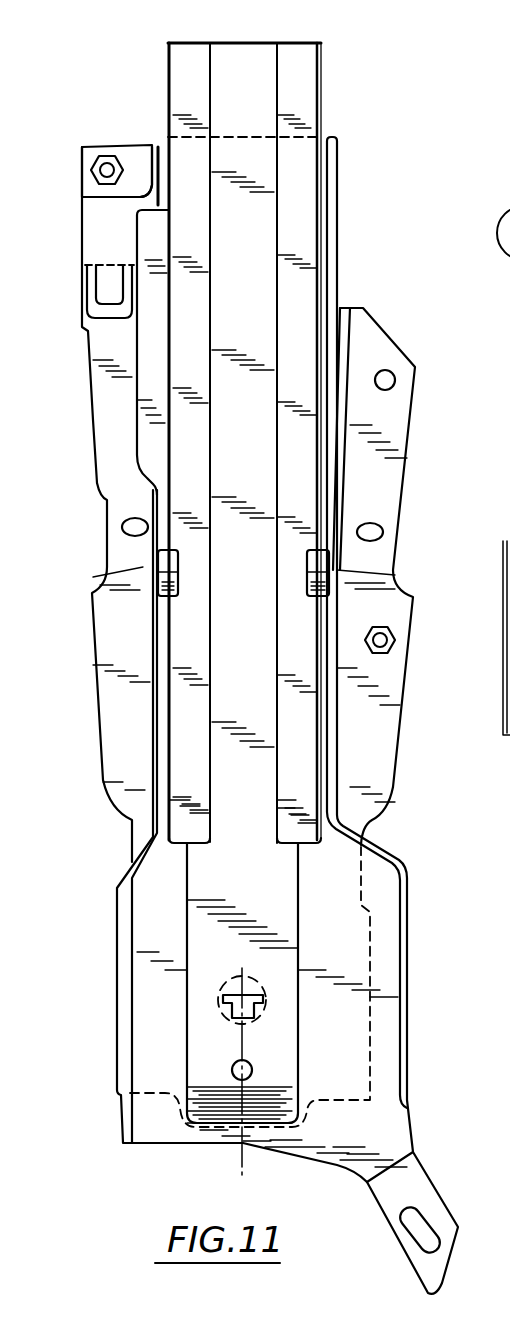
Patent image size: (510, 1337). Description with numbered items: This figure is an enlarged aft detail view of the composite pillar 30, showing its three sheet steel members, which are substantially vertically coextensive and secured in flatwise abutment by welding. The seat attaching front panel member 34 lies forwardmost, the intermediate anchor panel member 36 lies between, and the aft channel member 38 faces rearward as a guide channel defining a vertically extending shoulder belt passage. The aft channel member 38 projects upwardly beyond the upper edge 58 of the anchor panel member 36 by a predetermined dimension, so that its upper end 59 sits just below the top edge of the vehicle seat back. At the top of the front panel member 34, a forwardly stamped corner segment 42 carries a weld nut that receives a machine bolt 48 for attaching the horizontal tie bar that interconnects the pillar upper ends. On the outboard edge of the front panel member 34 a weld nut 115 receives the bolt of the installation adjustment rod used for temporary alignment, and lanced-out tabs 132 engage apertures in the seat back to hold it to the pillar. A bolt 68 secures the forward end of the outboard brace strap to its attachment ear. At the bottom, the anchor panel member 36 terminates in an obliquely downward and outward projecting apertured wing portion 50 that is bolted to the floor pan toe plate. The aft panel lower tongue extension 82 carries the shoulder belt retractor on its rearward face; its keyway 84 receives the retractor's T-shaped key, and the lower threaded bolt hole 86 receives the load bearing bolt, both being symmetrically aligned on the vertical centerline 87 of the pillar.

The composite pillar 30 is at (378, 139).
The front panel member 34 is at (392, 332).
The intermediate anchor panel member 36 is at (396, 857).
The aft channel member 38 is at (326, 78).
The corner segment 42 is at (119, 148).
The machine bolt 48 is at (98, 152).
The apertured wing portion 50 is at (424, 1186).
The upper edge 58 is at (337, 140).
The upper end 59 is at (292, 44).
The bolt 68 is at (307, 573).
The lower tongue extension 82 is at (288, 910).
The keyway 84 is at (248, 1018).
The lower threaded bolt hole 86 is at (253, 1076).
The vertical centerline 87 is at (242, 1152).
The weld nut 115 is at (396, 639).
The lanced-out tabs 132 is at (101, 293).